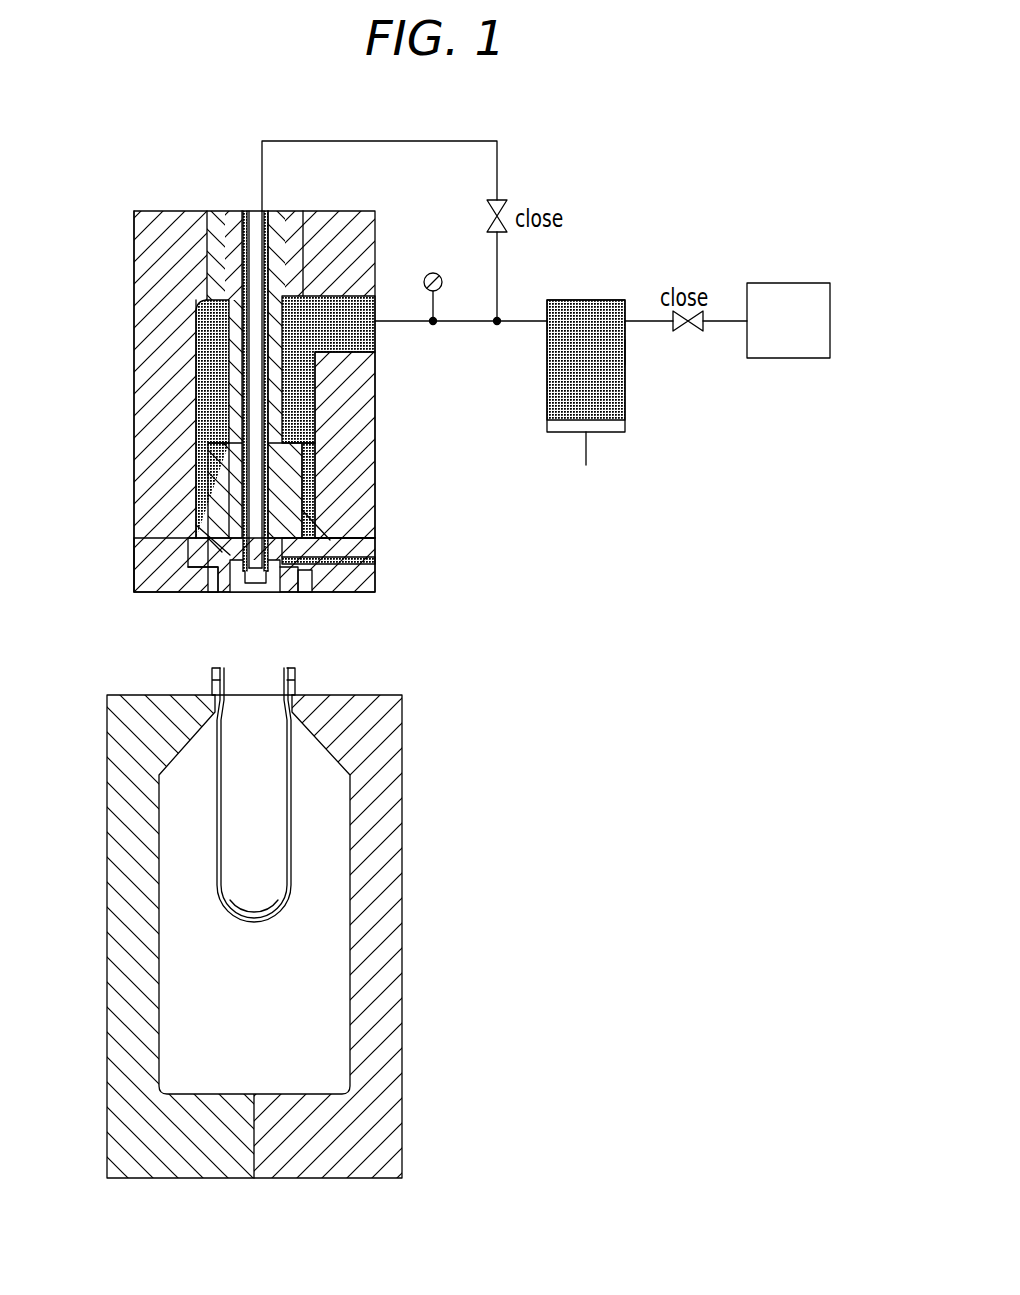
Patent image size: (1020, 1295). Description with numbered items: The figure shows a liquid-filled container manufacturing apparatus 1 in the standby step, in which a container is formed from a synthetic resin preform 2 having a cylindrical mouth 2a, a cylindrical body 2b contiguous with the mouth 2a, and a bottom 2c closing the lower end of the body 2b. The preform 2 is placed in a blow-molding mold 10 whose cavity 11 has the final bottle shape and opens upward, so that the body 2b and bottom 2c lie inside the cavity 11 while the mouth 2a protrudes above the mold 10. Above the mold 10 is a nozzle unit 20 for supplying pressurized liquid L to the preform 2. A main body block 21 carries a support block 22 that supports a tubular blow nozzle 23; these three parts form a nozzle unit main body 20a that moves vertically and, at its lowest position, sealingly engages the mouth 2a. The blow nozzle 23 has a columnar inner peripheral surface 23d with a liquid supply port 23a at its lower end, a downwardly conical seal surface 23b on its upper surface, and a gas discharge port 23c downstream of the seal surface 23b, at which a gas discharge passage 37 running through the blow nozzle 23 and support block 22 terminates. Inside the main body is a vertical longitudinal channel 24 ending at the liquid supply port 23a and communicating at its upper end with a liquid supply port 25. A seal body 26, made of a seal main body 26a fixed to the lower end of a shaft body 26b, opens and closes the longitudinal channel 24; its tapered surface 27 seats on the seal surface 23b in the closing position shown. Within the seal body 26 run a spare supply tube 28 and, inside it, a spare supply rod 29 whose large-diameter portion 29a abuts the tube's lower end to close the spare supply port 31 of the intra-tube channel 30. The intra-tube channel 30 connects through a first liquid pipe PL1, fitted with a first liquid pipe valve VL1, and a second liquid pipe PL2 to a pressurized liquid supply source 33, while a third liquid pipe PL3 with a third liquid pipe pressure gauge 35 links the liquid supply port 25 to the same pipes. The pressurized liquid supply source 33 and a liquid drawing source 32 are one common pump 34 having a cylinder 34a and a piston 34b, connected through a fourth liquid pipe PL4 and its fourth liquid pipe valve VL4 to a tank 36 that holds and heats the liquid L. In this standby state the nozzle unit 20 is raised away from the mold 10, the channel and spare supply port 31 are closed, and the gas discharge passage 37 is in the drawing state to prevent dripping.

The liquid-filled container manufacturing apparatus 1 is at (672, 150).
The preform 2 is at (280, 820).
The mouth 2a is at (295, 672).
The body 2b is at (290, 798).
The bottom 2c is at (253, 924).
The blow-molding mold 10 is at (297, 936).
The cavity 11 is at (350, 990).
The nozzle unit 20 is at (105, 310).
The nozzle unit main body 20a is at (132, 350).
The main body block 21 is at (160, 392).
The support block 22 is at (158, 580).
The blow nozzle 23 is at (178, 548).
The liquid supply port 23a is at (208, 590).
The seal surface 23b is at (300, 515).
The gas discharge port 23c is at (276, 587).
The inner peripheral surface 23d is at (215, 526).
The longitudinal channel 24 is at (305, 395).
The liquid supply port 25 is at (345, 345).
The seal body 26 is at (303, 450).
The seal main body 26a is at (290, 476).
The shaft body 26b is at (235, 322).
The tapered surface 27 is at (360, 540).
The spare supply tube 28 is at (240, 465).
The spare supply rod 29 is at (250, 486).
The large-diameter portion 29a is at (255, 588).
The intra-tube channel 30 is at (262, 258).
The spare supply port 31 is at (246, 588).
The liquid drawing source 32 is at (586, 366).
The pressurized liquid supply source 33 is at (628, 385).
The pump 34 is at (660, 366).
The cylinder 34a is at (626, 353).
The piston 34b is at (604, 432).
The third liquid pipe pressure gauge 35 is at (433, 272).
The tank 36 is at (788, 283).
The gas discharge passage 37 is at (332, 588).
The liquid L is at (212, 420).
The first liquid pipe PL1 is at (417, 142).
The second liquid pipe PL2 is at (516, 321).
The third liquid pipe PL3 is at (463, 321).
The fourth liquid pipe PL4 is at (637, 321).
The first liquid pipe valve VL1 is at (500, 200).
The fourth liquid pipe valve VL4 is at (697, 324).